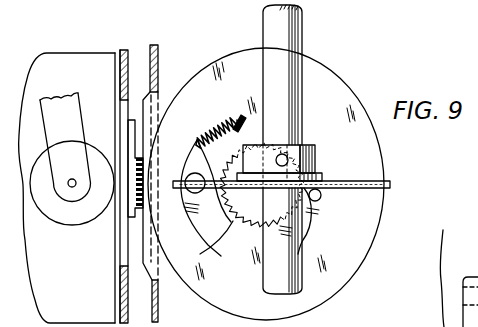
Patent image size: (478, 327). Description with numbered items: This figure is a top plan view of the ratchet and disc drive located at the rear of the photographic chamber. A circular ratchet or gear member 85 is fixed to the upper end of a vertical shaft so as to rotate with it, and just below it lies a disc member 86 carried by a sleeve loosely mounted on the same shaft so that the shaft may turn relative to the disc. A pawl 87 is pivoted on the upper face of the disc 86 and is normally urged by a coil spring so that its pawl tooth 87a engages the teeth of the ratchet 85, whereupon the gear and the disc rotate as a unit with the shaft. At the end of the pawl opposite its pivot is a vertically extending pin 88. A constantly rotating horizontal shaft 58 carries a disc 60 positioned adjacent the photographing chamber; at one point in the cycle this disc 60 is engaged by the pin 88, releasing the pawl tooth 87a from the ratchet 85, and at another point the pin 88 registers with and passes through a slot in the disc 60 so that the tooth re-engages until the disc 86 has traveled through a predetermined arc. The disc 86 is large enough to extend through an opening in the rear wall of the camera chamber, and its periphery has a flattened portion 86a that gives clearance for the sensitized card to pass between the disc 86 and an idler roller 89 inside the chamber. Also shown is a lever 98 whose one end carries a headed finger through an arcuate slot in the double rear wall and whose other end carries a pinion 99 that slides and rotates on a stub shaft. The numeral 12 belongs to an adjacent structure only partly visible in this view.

The horizontal shaft 58 is at (302, 26).
The disc 60 is at (370, 181).
The ratchet or gear member 85 is at (203, 232).
The disc member 86 is at (378, 226).
The flattened portion 86a is at (140, 134).
The pawl 87 is at (316, 221).
The pawl tooth 87a is at (211, 245).
The pin 88 is at (321, 197).
The idler roller 89 is at (72, 225).
The lever 98 is at (130, 125).
The pinion 99 is at (146, 178).
The housing 12 is at (459, 278).